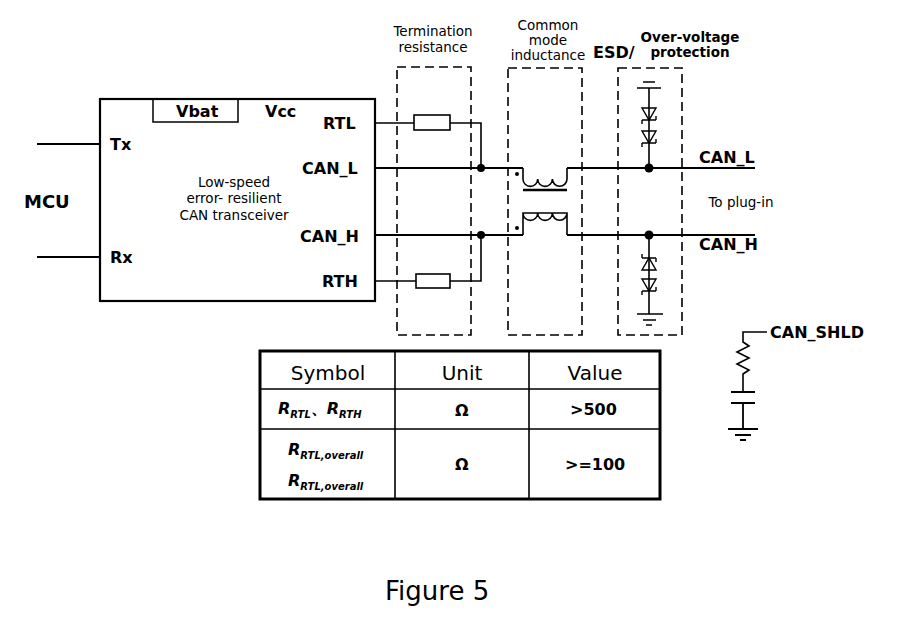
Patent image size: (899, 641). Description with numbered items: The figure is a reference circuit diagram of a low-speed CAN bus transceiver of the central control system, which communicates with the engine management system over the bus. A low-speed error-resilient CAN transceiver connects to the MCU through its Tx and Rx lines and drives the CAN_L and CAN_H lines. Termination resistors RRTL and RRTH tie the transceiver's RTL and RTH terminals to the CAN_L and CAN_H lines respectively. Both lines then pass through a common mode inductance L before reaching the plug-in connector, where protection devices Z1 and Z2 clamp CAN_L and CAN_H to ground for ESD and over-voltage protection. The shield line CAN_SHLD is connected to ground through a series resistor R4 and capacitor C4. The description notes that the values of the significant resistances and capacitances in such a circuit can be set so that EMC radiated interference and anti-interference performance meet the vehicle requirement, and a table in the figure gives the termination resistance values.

The termination resistor RTL RRTL is at (430, 134).
The termination resistor RTH RRTH is at (430, 259).
The common mode inductance L is at (541, 191).
The ESD/over-voltage protection diode Z1 is at (655, 127).
The ESD/over-voltage protection diode Z2 is at (655, 278).
The shield resistor R4 is at (757, 362).
The shield capacitor C4 is at (752, 416).